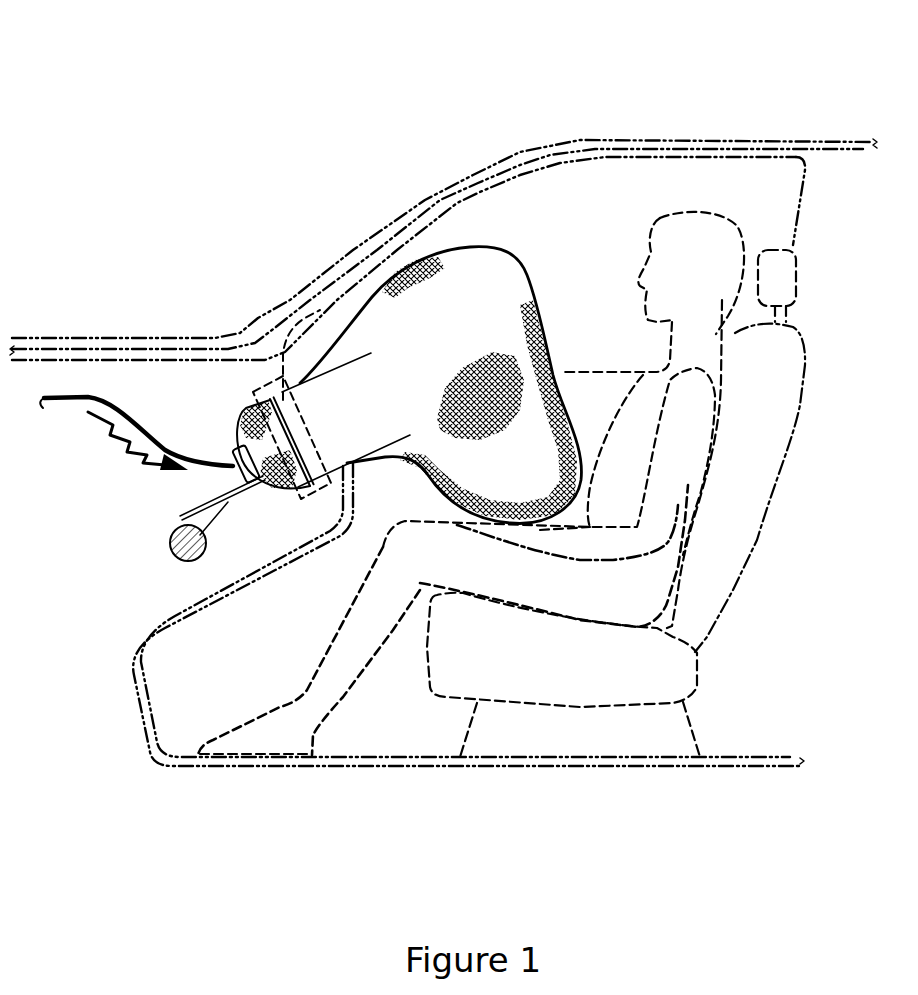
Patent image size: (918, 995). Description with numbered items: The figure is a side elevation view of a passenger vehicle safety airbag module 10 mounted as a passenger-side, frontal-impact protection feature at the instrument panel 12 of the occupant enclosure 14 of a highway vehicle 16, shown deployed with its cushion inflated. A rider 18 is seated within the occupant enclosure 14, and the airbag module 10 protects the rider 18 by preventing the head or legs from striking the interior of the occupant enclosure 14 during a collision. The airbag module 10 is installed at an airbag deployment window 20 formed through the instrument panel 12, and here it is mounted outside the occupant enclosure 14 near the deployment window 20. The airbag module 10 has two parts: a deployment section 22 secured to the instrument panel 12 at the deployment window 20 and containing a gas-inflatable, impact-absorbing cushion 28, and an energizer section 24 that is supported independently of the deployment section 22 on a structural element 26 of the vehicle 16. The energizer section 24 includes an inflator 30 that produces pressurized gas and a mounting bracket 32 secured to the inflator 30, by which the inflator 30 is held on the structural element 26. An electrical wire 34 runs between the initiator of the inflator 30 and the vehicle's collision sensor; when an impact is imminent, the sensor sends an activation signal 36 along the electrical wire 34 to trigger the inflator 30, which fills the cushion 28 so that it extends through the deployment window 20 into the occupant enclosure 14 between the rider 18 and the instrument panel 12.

The airbag module 10 is at (319, 160).
The instrument panel 12 is at (275, 373).
The occupant enclosure 14 is at (290, 347).
The highway vehicle 16 is at (583, 128).
The rider 18 is at (692, 266).
The airbag deployment window 20 is at (358, 362).
The deployment section 22 is at (507, 240).
The energizer section 24 is at (140, 433).
The structural element 26 is at (167, 553).
The cushion 28 is at (461, 357).
The inflator 30 is at (233, 472).
The mounting bracket 32 is at (213, 497).
The electrical wire 34 is at (74, 405).
The activation signal 36 is at (125, 442).